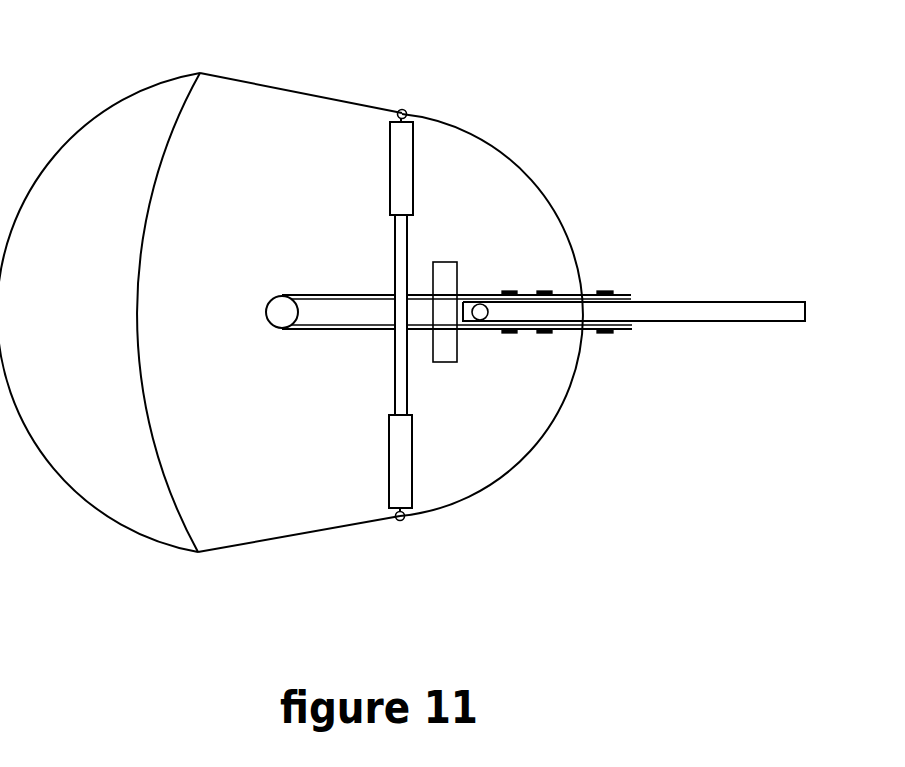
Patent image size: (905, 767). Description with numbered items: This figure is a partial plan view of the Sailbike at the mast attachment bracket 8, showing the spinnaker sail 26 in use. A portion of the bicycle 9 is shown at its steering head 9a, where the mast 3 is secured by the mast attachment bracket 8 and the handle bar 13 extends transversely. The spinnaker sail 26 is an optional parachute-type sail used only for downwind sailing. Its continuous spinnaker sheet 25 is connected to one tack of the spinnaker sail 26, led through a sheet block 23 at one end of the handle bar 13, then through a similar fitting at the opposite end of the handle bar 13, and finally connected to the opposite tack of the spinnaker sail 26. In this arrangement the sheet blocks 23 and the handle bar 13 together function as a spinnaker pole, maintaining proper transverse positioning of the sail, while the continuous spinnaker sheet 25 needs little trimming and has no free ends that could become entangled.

The spinnaker sail 26 is at (201, 312).
The spinnaker sheet 25 is at (622, 334).
The sheet block 23 is at (621, 342).
The handle bar 13 is at (617, 316).
The mast 3 is at (555, 369).
The bicycle 9 is at (646, 260).
The steering head 9a is at (658, 353).
The mast attachment bracket 8 is at (665, 234).